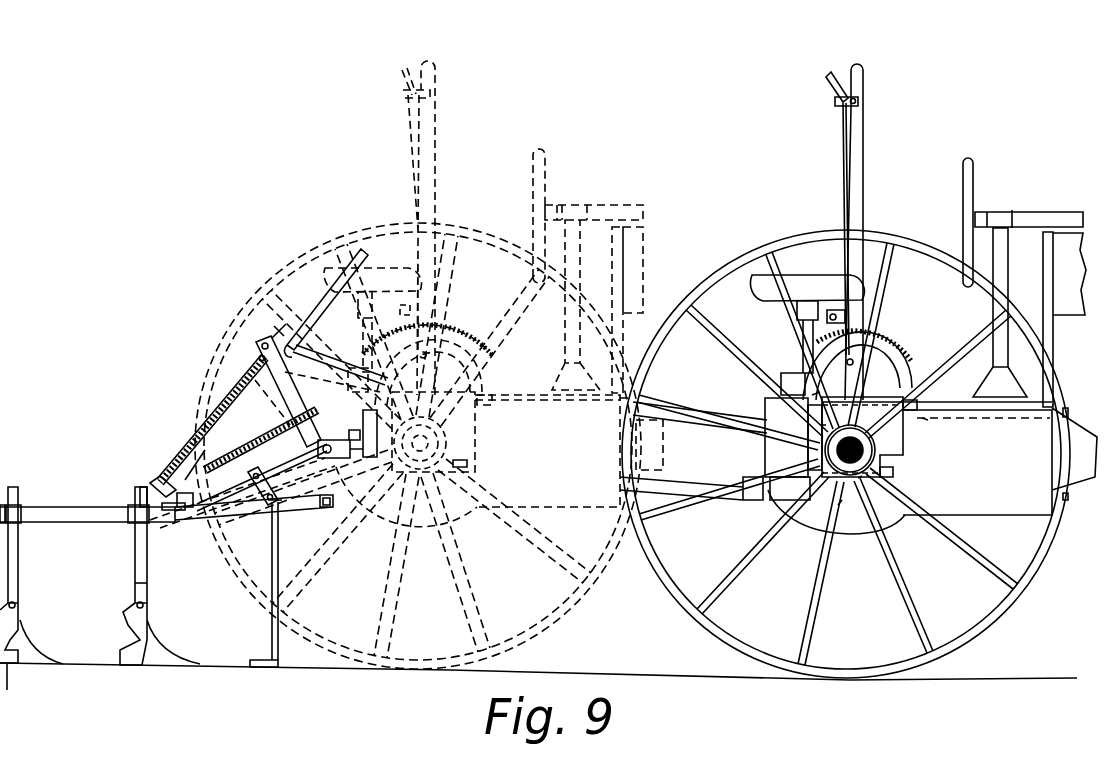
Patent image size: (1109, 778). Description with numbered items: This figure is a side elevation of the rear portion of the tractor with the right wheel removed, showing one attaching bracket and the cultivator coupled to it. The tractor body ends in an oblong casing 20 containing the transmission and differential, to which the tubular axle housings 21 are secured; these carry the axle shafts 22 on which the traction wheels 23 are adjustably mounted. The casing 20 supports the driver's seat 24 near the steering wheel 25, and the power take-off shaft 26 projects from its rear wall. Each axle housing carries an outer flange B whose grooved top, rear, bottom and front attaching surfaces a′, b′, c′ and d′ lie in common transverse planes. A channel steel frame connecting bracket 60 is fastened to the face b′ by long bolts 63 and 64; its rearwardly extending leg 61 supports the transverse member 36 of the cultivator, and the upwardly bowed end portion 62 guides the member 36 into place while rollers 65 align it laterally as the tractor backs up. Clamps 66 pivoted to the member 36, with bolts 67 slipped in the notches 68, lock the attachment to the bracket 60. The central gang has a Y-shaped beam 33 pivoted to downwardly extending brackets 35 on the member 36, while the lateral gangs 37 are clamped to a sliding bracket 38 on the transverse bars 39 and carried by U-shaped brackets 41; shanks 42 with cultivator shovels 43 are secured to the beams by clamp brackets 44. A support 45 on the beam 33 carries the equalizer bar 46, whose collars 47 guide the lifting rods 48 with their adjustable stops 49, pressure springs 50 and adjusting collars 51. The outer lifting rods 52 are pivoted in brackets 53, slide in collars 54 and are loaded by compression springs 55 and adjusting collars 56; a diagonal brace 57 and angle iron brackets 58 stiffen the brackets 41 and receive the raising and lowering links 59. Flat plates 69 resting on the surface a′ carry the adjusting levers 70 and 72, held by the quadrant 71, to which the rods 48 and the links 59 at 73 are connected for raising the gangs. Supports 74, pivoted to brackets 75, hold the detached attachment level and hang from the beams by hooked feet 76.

The oblong casing 20 is at (1035, 515).
The tubular axle housing 21 is at (893, 437).
The axle shaft 22 is at (876, 452).
The traction wheel 23 is at (720, 633).
The driver's seat 24 is at (840, 276).
The steering wheel 25 is at (975, 170).
The power take-off shaft 26 is at (740, 490).
The Y-shaped beam 33 is at (238, 514).
The downwardly extending bracket 35 is at (332, 520).
The transverse member 36 is at (368, 420).
The lateral gang 37 is at (100, 512).
The pivoted and laterally sliding bracket 38 is at (355, 482).
The transverse bar 39 is at (318, 448).
The U-shaped bracket 41 is at (150, 585).
The shank 42 is at (20, 540).
The cultivator shovel 43 is at (135, 645).
The clamp bracket 44 is at (20, 492).
The upwardly extending support 45 is at (172, 512).
The equalizer bar 46 is at (260, 478).
The collar 47 is at (162, 478).
The lifting rod 48 is at (298, 336).
The adjustable stop 49 is at (150, 487).
The pressure spring 50 is at (205, 450).
The adjusting collar 51 is at (340, 398).
The lifting rod 52 is at (272, 333).
The bracket 53 is at (212, 530).
The collar 54 is at (265, 345).
The compression spring 55 is at (245, 372).
The adjusting collar 56 is at (255, 458).
The diagonal brace 57 is at (285, 414).
The angle iron bracket 58 is at (318, 358).
The raising and lowering link 59 is at (322, 305).
The frame connecting bracket 60 is at (830, 478).
The rearwardly extending leg 61 is at (790, 495).
The upwardly bowed end portion 62 is at (795, 462).
The long bolt 63 is at (917, 405).
The long bolt 64 is at (893, 472).
The roller 65 is at (385, 468).
The clamp 66 is at (380, 420).
The bolt 67 is at (428, 436).
The notch 68 is at (808, 440).
The flat plate 69 is at (890, 400).
The adjusting lever 70 is at (864, 140).
The quadrant 71 is at (880, 338).
The adjusting lever 72 is at (843, 362).
The pivot connection 73 is at (827, 318).
The support 74 is at (278, 545).
The bracket 75 is at (262, 470).
The hooked foot 76 is at (262, 660).
The top attaching surface a′ is at (812, 395).
The rear attaching surface b′ is at (822, 425).
The bottom attaching surface c′ is at (858, 478).
The front attaching surface d′ is at (928, 420).
The outer flange B is at (842, 500).